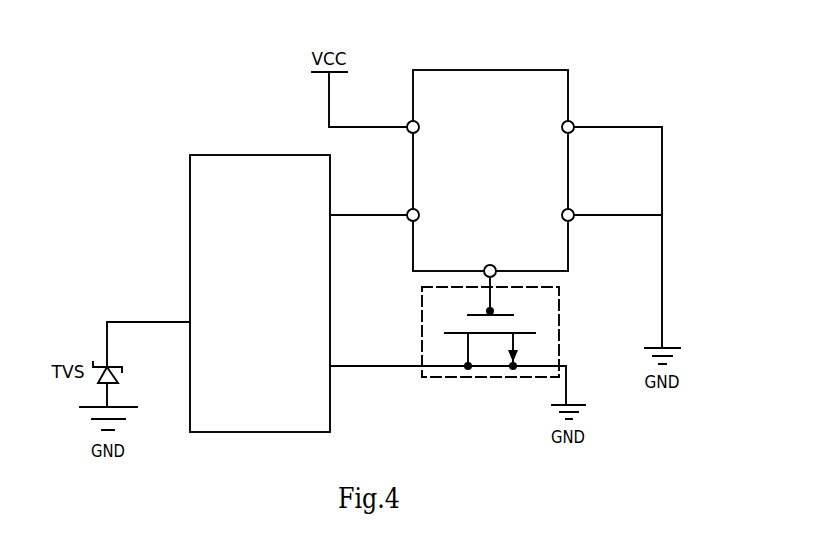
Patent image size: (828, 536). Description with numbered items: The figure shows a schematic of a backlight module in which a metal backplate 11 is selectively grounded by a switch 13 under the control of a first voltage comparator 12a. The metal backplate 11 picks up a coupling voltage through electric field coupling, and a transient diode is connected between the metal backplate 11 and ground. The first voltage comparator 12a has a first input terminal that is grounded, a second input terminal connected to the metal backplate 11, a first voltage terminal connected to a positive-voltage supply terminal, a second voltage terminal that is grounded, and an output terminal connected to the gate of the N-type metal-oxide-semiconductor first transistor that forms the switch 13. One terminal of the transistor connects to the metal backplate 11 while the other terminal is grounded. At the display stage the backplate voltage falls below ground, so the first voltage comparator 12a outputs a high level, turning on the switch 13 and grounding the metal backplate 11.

The first voltage comparator 12a is at (496, 82).
The metal backplate 11 is at (260, 293).
The switch 13 is at (443, 377).